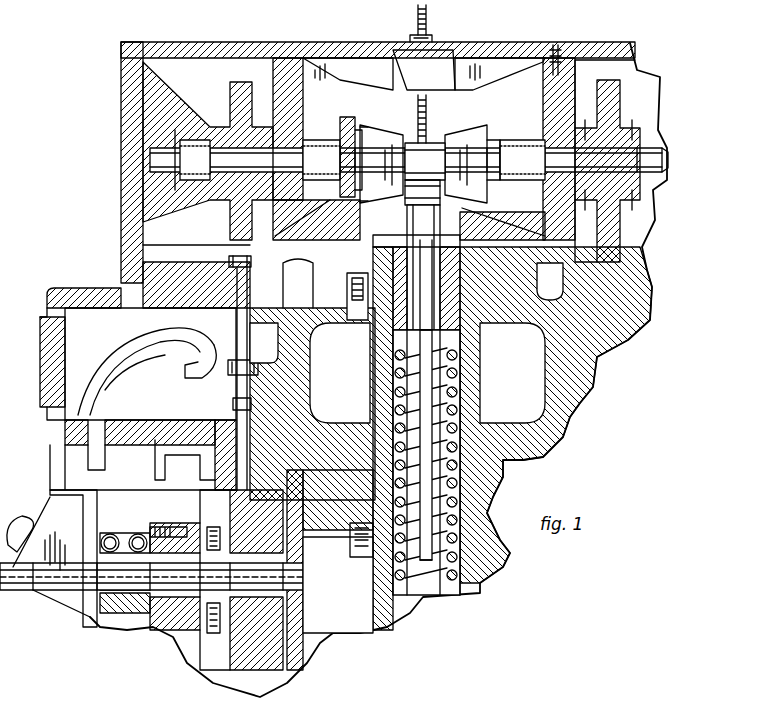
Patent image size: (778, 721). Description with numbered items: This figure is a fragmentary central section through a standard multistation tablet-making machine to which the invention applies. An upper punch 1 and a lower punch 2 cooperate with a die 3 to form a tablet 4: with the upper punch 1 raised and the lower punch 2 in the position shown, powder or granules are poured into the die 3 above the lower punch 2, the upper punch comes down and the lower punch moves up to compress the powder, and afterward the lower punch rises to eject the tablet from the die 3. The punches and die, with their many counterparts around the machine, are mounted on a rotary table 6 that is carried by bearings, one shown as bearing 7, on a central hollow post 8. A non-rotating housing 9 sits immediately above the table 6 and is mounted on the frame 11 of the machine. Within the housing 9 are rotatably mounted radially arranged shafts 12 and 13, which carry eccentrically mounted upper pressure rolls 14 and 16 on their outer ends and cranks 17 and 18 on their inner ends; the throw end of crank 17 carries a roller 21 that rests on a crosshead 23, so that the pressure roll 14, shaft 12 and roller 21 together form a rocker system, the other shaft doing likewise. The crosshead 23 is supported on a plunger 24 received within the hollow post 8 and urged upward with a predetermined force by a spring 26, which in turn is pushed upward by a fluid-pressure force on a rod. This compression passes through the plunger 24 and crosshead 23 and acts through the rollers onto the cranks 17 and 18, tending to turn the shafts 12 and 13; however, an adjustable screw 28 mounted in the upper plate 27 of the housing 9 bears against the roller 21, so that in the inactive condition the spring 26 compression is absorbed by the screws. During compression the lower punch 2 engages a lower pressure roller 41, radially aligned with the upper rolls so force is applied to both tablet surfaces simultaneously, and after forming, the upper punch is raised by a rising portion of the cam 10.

The upper punch 1 is at (251, 333).
The lower punch 2 is at (248, 421).
The die 3 is at (250, 366).
The tablet 4 is at (217, 362).
The rotary table 6 is at (305, 353).
The bearing 7 is at (355, 321).
The central hollow post 8 is at (367, 377).
The housing 9 is at (120, 143).
The cam 10 is at (230, 258).
The frame 11 is at (83, 288).
The shaft 12 is at (334, 135).
The shaft 13 is at (497, 152).
The upper pressure roll 14 is at (237, 95).
The upper pressure roll 16 is at (614, 96).
The crank 17 is at (383, 134).
The crank 18 is at (463, 138).
The roller 21 is at (428, 157).
The crosshead 23 is at (410, 191).
The plunger 24 is at (441, 231).
The spring 26 is at (480, 388).
The upper plate 27 is at (452, 42).
The screw 28 is at (415, 17).
The lower pressure roller 41 is at (245, 506).